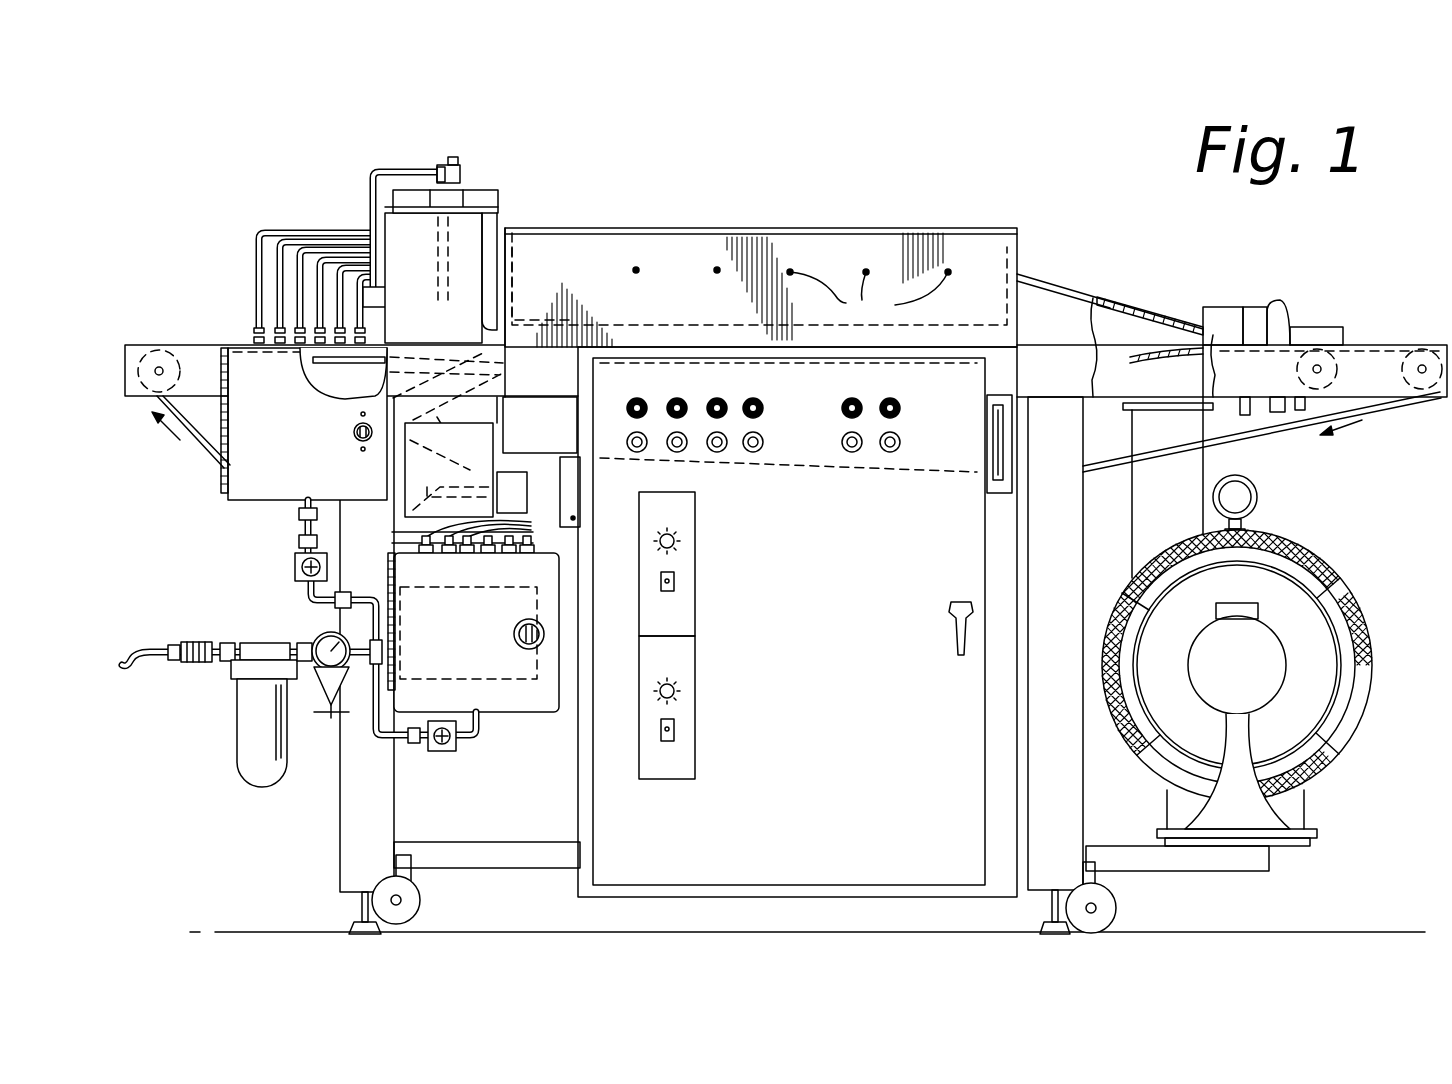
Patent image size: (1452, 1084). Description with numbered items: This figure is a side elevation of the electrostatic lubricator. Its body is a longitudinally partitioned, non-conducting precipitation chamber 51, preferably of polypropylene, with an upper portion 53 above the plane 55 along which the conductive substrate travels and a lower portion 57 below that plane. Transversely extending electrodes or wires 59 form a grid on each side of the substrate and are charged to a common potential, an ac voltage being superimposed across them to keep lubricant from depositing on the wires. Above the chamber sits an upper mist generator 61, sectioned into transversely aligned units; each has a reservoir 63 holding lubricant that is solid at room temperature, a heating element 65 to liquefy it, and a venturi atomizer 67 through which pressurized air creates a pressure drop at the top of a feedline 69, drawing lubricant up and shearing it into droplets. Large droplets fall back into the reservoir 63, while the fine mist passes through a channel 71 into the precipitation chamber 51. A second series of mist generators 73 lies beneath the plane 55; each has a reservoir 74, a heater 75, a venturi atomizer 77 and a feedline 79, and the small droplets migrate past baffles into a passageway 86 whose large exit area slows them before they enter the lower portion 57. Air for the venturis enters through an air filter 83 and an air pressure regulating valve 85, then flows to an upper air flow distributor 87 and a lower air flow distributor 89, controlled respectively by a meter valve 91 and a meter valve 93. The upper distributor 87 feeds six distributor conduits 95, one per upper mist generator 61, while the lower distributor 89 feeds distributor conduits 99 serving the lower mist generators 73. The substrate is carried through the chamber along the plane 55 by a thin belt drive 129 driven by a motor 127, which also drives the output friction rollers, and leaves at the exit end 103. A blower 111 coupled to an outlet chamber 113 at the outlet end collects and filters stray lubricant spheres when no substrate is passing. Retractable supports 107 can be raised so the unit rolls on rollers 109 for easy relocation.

The precipitation chamber 51 is at (992, 222).
The upper portion 53 is at (880, 266).
The plane 55 is at (1040, 347).
The lower portion 57 is at (962, 456).
The electrodes or wires 59 is at (940, 410).
The upper mist generator 61 is at (508, 184).
The reservoir 63 is at (495, 223).
The heating element 65 is at (428, 168).
The venturi atomizer 67 is at (453, 192).
The feedline 69 is at (424, 258).
The channel 71 is at (490, 272).
The mist generators 73 is at (400, 465).
The reservoir 74 is at (447, 474).
The heater 75 is at (405, 516).
The venturi atomizer 77 is at (343, 373).
The feedline 79 is at (505, 433).
The air filter 83 is at (250, 727).
The air pressure regulating valve 85 is at (317, 636).
The passageway 86 is at (497, 387).
The upper air flow distributor 87 is at (300, 429).
The lower air flow distributor 89 is at (479, 642).
The meter valve 91 is at (294, 567).
The meter valve 93 is at (441, 751).
The distributor conduits 95 is at (356, 255).
The distributor conduits 99 is at (492, 527).
The exit end 103 is at (1208, 338).
The supports 107 is at (356, 904).
The rollers 109 is at (414, 898).
The blower 111 is at (1330, 600).
The outlet chamber 113 is at (1065, 312).
The motor 127 is at (1277, 318).
The belt drive 129 is at (197, 453).